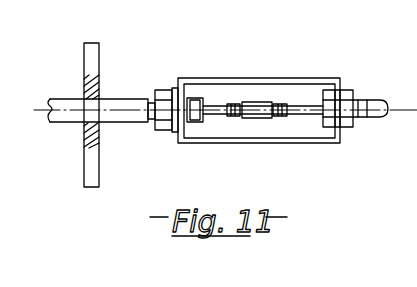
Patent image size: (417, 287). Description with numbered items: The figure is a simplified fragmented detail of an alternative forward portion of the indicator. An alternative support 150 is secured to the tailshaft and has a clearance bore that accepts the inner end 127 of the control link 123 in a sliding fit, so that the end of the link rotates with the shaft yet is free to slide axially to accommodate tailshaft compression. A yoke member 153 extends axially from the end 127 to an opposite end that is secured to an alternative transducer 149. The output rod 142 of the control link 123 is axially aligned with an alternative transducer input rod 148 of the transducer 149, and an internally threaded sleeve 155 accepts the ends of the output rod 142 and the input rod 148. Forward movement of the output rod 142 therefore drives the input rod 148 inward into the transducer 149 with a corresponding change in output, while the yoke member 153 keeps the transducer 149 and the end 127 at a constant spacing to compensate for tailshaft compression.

The alternative support 150 is at (115, 53).
The control link 123 is at (68, 99).
The inner end of the control link 127 is at (158, 126).
The yoke member 153 is at (213, 145).
The output rod 142 is at (213, 106).
The internally threaded sleeve 155 is at (260, 101).
The alternative transducer input rod 148 is at (346, 100).
The alternative transducer 149 is at (368, 118).